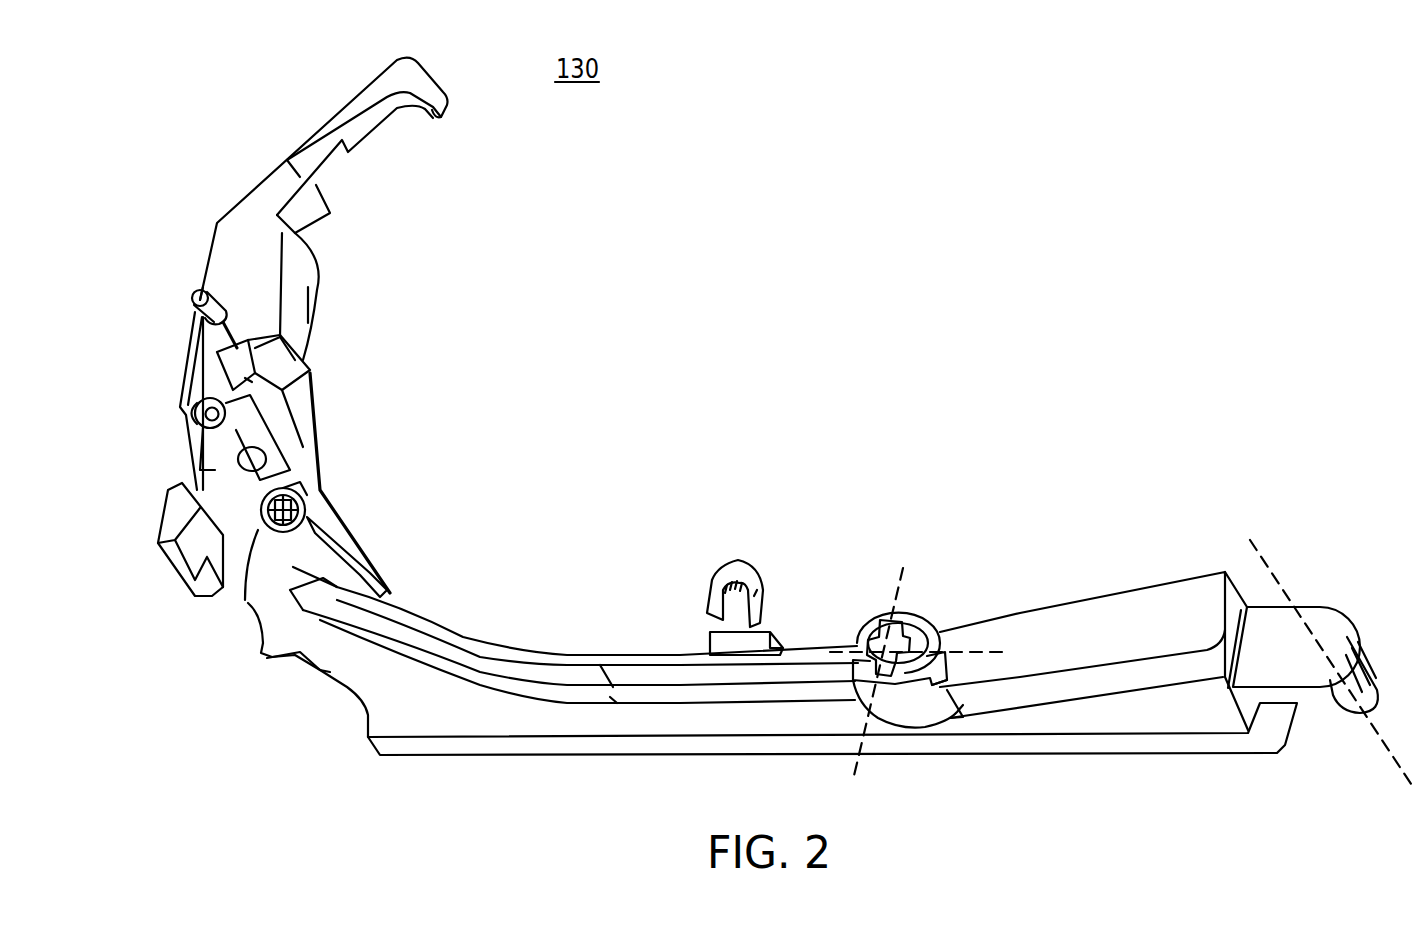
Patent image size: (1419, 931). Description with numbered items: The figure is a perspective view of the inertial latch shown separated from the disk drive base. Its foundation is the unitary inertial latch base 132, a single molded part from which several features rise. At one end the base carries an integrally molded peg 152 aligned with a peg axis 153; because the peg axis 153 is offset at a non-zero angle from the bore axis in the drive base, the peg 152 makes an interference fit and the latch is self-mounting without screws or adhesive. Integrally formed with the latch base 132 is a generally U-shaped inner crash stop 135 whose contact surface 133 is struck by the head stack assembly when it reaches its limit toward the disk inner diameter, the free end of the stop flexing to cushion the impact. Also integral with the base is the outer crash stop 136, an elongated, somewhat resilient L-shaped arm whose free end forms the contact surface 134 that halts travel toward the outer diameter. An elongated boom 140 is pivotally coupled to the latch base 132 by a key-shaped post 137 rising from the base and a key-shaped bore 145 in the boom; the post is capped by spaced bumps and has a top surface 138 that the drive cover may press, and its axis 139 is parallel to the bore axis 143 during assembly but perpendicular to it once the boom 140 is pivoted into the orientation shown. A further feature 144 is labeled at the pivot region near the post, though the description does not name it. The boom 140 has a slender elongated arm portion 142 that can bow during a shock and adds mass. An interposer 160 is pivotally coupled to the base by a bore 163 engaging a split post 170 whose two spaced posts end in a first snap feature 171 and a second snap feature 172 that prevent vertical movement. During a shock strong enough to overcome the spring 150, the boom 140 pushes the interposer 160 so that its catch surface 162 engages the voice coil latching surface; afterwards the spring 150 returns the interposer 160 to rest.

The inertial latch base 132 is at (1158, 720).
The contact surface of inner crash stop 133 is at (710, 596).
The contact surface of outer crash stop 134 is at (421, 112).
The inner crash stop 135 is at (762, 588).
The outer crash stop 136 is at (420, 72).
The key-shaped post 137 is at (918, 627).
The top surface of key-shaped post 138 is at (880, 637).
The axis of key-shaped post 139 is at (860, 768).
The elongated boom 140 is at (1108, 610).
The elongated arm portion 142 is at (534, 652).
The axis of key-shaped bore 143 is at (983, 653).
The stop block 144 is at (948, 653).
The key-shaped bore 145 is at (913, 667).
The spring 150 is at (203, 366).
The integrally molded peg 152 is at (1362, 697).
The peg axis 153 is at (1405, 768).
The interposer 160 is at (243, 455).
The interposer catch surface 162 is at (360, 545).
The bore 163 is at (212, 502).
The split post 170 is at (296, 510).
The first snap feature 171 is at (293, 482).
The second snap feature 172 is at (247, 596).